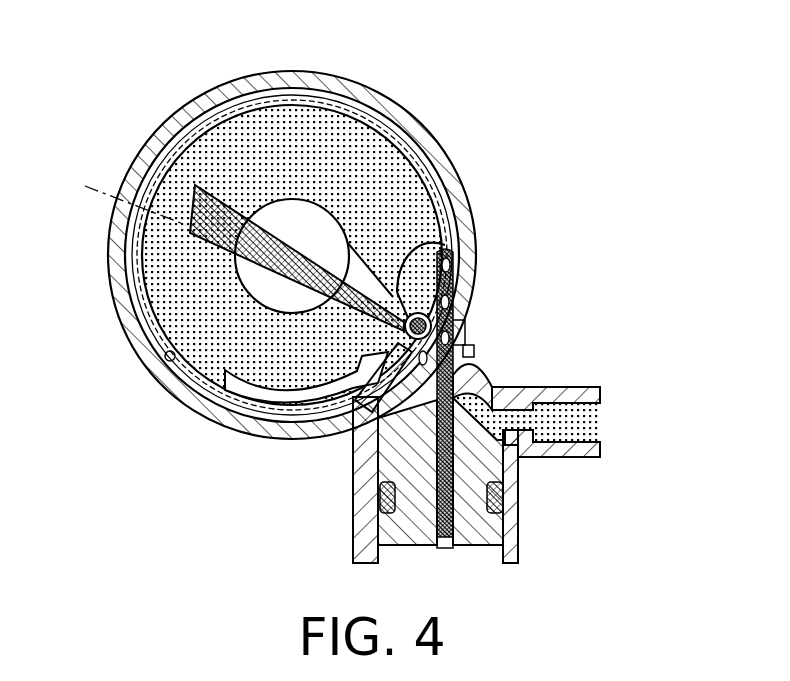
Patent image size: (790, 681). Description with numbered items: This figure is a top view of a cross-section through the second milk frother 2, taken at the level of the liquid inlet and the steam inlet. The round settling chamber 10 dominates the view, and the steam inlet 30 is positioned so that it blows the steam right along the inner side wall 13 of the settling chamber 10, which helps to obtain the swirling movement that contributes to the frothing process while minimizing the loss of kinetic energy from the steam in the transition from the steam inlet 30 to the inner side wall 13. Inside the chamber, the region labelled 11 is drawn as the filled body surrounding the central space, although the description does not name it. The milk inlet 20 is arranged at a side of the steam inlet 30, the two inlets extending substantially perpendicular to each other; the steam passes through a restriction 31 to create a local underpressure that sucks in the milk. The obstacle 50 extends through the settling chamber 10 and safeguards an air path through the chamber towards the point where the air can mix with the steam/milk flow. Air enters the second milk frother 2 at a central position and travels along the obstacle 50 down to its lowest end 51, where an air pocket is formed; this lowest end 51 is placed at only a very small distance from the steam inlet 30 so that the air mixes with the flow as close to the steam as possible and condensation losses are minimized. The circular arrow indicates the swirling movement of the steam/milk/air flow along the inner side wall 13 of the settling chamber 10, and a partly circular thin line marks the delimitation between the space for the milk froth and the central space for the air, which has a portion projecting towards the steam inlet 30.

The second milk frother 2 is at (545, 138).
The settling chamber 10 is at (310, 137).
The rotor body 11 is at (348, 147).
The inner side wall 13 is at (170, 358).
The milk inlet 20 is at (575, 422).
The steam inlet 30 is at (475, 351).
The restriction 31 is at (466, 326).
The obstacle 50 is at (188, 214).
The lowest end 51 is at (453, 249).